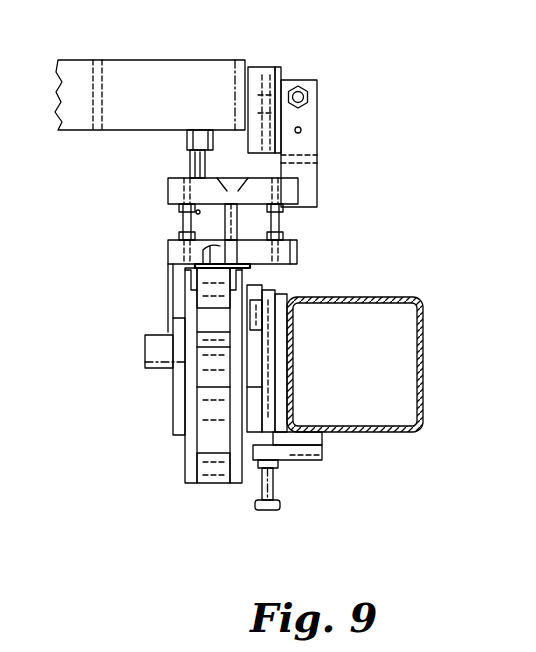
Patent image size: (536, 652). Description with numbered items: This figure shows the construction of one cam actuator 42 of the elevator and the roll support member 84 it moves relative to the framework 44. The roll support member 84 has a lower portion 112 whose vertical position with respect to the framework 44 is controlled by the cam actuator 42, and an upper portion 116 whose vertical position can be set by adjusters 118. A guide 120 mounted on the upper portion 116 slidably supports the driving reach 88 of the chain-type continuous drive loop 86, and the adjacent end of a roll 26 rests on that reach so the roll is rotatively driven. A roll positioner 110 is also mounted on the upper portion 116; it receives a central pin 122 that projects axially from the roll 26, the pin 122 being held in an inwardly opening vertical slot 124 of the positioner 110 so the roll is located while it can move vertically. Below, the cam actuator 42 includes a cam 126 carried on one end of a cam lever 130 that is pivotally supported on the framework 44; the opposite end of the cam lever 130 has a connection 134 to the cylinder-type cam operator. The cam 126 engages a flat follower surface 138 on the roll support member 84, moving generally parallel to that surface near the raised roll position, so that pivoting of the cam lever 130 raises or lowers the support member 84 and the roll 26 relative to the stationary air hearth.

The roll 26 is at (145, 60).
The central pin 122 is at (249, 67).
The vertical slot 124 is at (263, 67).
The roll positioner 110 is at (283, 80).
The continuous drive loop 86 is at (187, 129).
The driving reach 88 is at (184, 144).
The guide 120 is at (192, 163).
The upper portion 116 is at (168, 192).
The adjuster 118 is at (282, 228).
The lower portion 112 is at (180, 249).
The roll support member 84 is at (301, 240).
The flat follower surface 138 is at (215, 262).
The cam 126 is at (208, 266).
The cam lever 130 is at (236, 318).
The cam actuator 42 is at (183, 393).
The connection 134 is at (213, 485).
The framework 44 is at (369, 433).